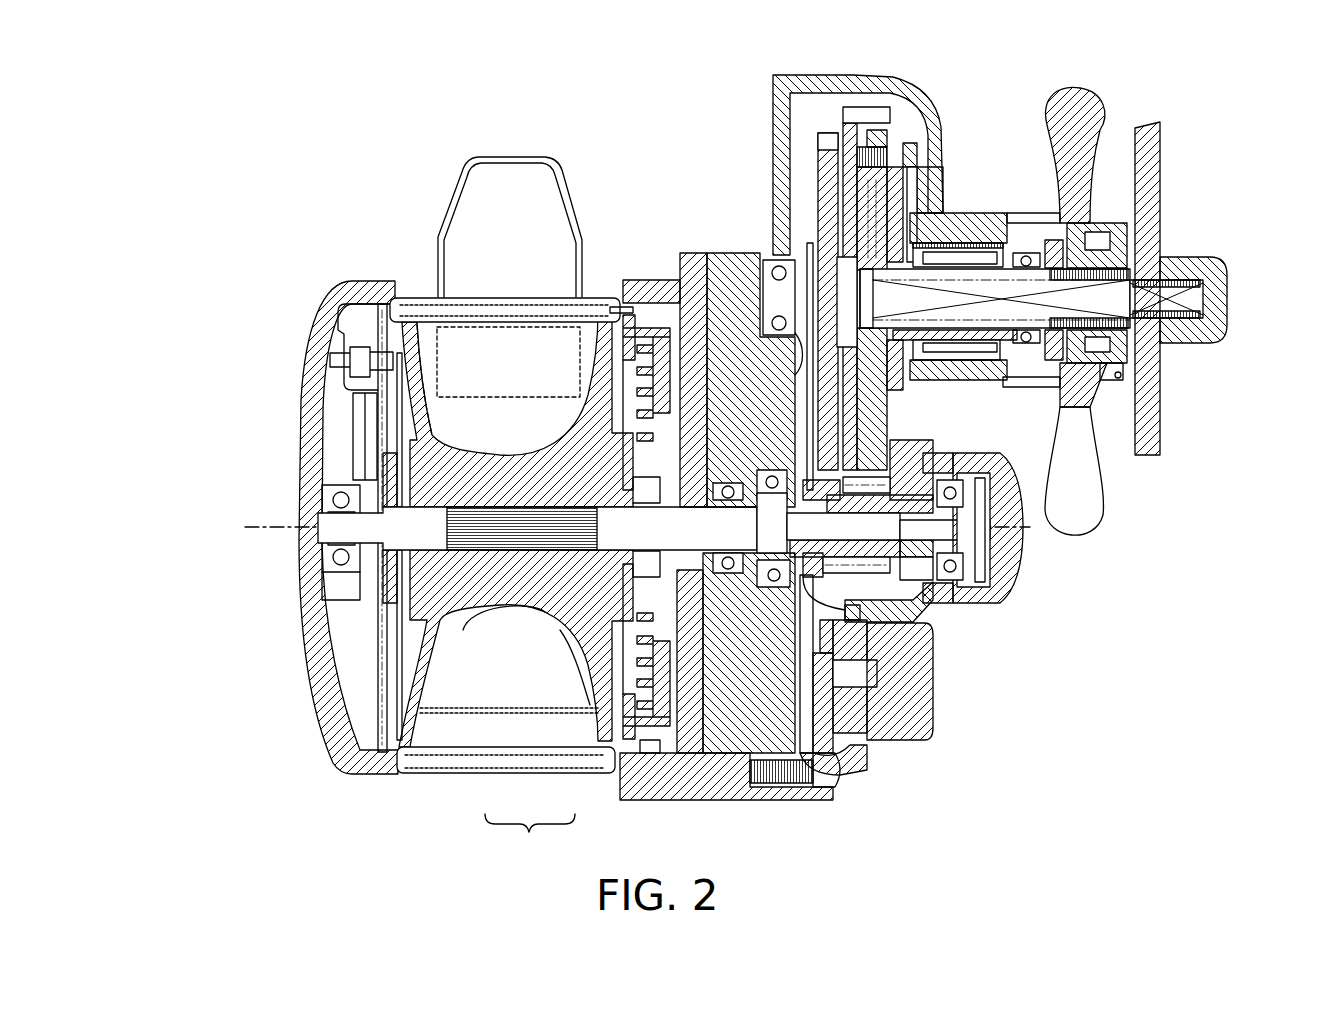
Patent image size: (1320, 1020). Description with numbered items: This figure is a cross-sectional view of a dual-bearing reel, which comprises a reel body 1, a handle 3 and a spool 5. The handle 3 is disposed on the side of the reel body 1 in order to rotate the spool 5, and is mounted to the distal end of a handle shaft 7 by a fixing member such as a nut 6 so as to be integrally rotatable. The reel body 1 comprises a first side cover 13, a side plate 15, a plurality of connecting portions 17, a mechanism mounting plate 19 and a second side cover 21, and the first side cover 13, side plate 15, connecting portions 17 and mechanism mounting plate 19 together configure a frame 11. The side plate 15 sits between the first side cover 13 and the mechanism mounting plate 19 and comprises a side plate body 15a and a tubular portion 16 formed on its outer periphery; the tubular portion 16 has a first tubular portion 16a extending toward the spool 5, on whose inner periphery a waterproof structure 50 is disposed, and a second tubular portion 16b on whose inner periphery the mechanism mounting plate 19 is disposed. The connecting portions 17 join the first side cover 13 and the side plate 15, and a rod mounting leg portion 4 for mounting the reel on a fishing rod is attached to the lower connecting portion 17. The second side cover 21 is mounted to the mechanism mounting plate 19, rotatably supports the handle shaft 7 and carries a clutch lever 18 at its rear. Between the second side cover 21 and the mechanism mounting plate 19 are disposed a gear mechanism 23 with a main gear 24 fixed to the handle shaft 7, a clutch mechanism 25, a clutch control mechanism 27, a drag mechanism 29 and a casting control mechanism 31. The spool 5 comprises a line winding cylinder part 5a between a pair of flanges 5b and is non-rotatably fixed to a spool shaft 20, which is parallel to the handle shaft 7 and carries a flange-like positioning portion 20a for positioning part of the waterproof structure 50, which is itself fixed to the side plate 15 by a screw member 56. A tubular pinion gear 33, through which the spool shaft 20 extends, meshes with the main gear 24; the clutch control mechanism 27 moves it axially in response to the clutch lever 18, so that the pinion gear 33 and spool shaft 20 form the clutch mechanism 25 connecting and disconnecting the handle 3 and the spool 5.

The reel body 1 is at (280, 285).
The handle 3 is at (1178, 170).
The rod mounting leg portion 4 is at (506, 176).
The spool 5 is at (530, 840).
The line winding cylinder part 5a is at (512, 600).
The flanges 5b is at (585, 605).
The nut 6 is at (1230, 272).
The handle shaft 7 is at (1063, 367).
The frame 11 is at (634, 540).
The first side cover 13 is at (300, 440).
The side plate 15 is at (725, 112).
The side plate body 15a is at (647, 315).
The tubular portion 16 is at (765, 165).
The first tubular portion 16a is at (683, 310).
The second tubular portion 16b is at (740, 262).
The connecting portions 17 is at (447, 740).
The clutch lever 18 is at (905, 735).
The mechanism mounting plate 19 is at (745, 760).
The spool shaft 20 is at (487, 490).
The positioning portion 20a is at (548, 447).
The second side cover 21 is at (785, 790).
The gear mechanism 23 is at (858, 105).
The main gear 24 is at (822, 311).
The clutch mechanism 25 is at (692, 745).
The clutch control mechanism 27 is at (895, 625).
The drag mechanism 29 is at (890, 160).
The casting control mechanism 31 is at (1033, 582).
The pinion gear 33 is at (905, 575).
The waterproof structure 50 is at (652, 748).
The screw member 56 is at (438, 620).